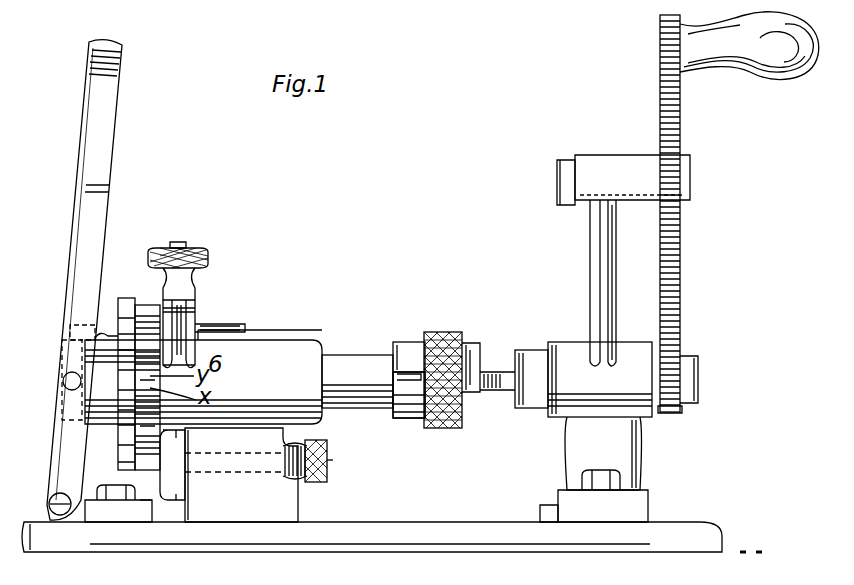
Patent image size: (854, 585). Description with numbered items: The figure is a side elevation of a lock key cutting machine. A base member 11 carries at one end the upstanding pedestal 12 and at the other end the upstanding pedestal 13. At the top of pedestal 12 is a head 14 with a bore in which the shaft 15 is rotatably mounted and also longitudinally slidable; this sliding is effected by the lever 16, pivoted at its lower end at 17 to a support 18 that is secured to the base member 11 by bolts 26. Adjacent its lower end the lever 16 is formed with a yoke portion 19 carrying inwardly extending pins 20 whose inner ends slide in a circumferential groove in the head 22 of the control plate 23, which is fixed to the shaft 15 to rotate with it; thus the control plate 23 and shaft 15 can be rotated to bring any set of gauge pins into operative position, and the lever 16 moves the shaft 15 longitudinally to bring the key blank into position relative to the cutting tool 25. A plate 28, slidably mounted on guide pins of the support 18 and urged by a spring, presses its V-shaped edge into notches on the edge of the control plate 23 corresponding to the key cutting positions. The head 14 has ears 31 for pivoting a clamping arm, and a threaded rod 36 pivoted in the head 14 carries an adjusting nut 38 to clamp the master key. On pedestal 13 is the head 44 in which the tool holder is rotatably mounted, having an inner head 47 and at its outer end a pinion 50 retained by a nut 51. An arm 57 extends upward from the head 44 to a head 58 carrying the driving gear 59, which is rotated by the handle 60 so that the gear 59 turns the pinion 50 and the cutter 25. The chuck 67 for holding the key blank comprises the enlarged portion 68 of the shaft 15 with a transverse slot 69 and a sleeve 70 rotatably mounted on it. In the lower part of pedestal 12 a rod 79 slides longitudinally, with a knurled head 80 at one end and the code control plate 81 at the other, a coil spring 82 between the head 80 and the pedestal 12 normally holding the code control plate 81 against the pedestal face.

The base member 11 is at (458, 560).
The pedestal 12 is at (258, 511).
The pedestal 13 is at (615, 445).
The head 14 is at (280, 386).
The shaft 15 is at (347, 360).
The lever 16 is at (104, 135).
The pivot 17 is at (58, 516).
The support 18 is at (146, 502).
The yoke portion 19 is at (66, 328).
The pins 20 is at (62, 384).
The head 22 is at (98, 332).
The control plate 23 is at (128, 306).
The cutting tool 25 is at (496, 393).
The bolts 26 is at (116, 502).
The plate 28 is at (104, 468).
The ears 31 is at (192, 312).
The threaded rod 36 is at (179, 240).
The adjusting nut 38 is at (206, 250).
The head 44 is at (634, 360).
The head 47 is at (530, 352).
The pinion 50 is at (672, 413).
The nut 51 is at (698, 362).
The arm 57 is at (600, 265).
The head 58 is at (614, 163).
The driving gear 59 is at (682, 118).
The handle 60 is at (778, 78).
The chuck 67 is at (454, 398).
The enlarged portion 68 is at (407, 345).
The transverse slot 69 is at (406, 405).
The sleeve 70 is at (446, 336).
The rod 79 is at (290, 455).
The knurled head 80 is at (330, 462).
The code control plate 81 is at (178, 500).
The coil spring 82 is at (305, 474).